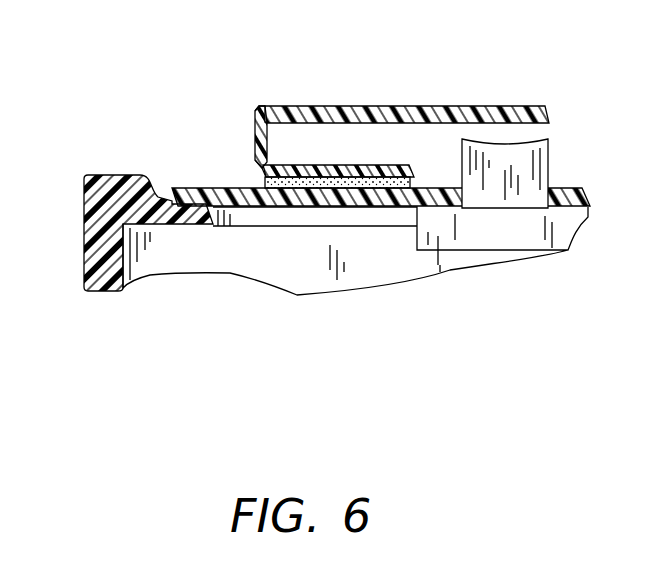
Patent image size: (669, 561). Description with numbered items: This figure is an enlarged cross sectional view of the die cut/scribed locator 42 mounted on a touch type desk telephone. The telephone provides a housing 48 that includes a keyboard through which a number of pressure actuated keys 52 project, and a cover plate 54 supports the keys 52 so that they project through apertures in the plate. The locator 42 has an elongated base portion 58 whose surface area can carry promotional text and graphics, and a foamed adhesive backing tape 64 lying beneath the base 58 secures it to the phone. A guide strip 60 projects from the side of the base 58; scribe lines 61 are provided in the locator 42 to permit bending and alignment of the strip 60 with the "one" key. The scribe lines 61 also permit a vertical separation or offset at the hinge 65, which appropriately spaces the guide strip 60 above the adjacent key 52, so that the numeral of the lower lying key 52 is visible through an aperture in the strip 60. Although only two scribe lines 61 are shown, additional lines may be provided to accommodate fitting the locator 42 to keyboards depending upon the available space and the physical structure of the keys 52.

The locator 42 is at (556, 100).
The housing 48 is at (85, 190).
The pressure actuated key 52 is at (553, 140).
The cover plate 54 is at (185, 187).
The base portion 58 is at (368, 164).
The guide strip 60 is at (397, 106).
The scribe line 61 is at (264, 110).
The foamed adhesive backing tape 64 is at (387, 207).
The hinge 65 is at (255, 127).